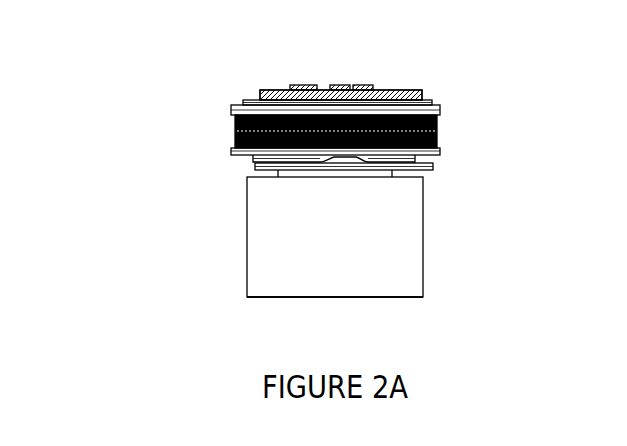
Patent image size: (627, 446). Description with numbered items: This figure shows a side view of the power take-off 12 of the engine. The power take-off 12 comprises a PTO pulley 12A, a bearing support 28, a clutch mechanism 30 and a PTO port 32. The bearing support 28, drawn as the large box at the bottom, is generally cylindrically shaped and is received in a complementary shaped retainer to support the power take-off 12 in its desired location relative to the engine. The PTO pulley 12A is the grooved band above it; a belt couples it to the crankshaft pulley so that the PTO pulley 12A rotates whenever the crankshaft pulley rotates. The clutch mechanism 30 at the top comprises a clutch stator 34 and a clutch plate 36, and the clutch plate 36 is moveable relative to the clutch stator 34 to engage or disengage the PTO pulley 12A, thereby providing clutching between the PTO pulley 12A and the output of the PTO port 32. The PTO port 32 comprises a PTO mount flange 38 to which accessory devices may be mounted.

The power take-off 12 is at (166, 169).
The PTO pulley 12A is at (437, 130).
The bearing support 28 is at (410, 236).
The clutch mechanism 30 is at (383, 90).
The clutch plate 36 is at (383, 90).
The PTO port 32 is at (372, 298).
The PTO mount flange 38 is at (372, 298).
The clutch stator 34 is at (249, 166).